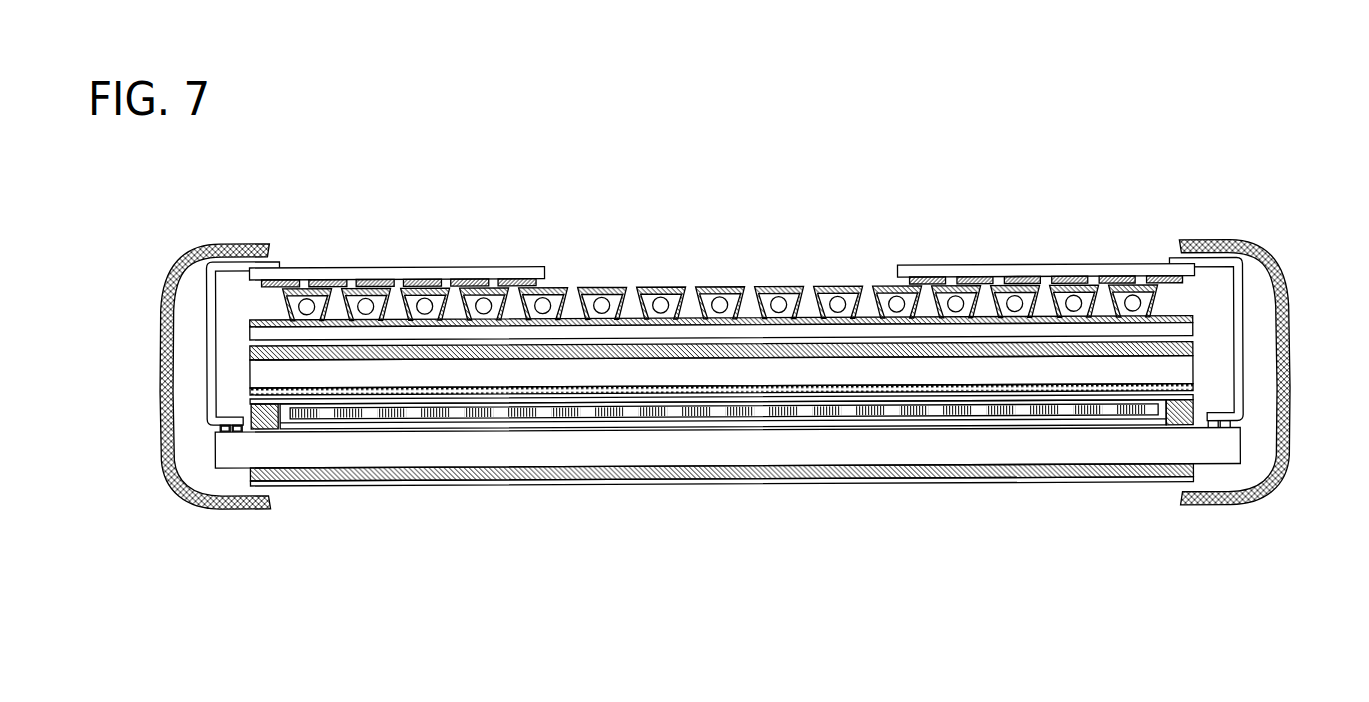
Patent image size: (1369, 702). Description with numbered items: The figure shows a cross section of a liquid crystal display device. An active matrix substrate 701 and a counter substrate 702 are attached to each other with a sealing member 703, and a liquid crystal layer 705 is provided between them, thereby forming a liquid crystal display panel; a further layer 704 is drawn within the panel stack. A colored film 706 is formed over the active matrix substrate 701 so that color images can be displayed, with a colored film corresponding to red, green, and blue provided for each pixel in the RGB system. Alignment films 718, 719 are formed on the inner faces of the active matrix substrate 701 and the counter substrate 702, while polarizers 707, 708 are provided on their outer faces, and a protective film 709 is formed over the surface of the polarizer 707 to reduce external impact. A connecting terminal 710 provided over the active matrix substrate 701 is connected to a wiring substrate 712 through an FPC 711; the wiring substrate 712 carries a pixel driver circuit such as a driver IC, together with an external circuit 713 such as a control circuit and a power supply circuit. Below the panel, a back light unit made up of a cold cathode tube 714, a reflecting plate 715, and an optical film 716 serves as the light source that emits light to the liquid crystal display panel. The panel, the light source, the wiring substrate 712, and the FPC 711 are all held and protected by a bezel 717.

The active matrix substrate 701 is at (452, 445).
The counter substrate 702 is at (538, 373).
The sealing member 703 is at (272, 432).
The optical sheet 704 is at (710, 400).
The liquid crystal layer 705 is at (937, 408).
The colored film 706 is at (653, 388).
The polarizer 707 is at (1043, 466).
The polarizer 708 is at (1092, 348).
The protective film 709 is at (880, 484).
The connecting terminal 710 is at (232, 427).
The FPC 711 is at (210, 376).
The wiring substrate 712 is at (392, 277).
The external circuit 713 is at (362, 278).
The cold cathode tube 714 is at (770, 295).
The reflecting plate 715 is at (728, 288).
The optical film 716 is at (582, 336).
The bezel 717 is at (212, 243).
The alignment film 718 is at (1152, 414).
The alignment film 719 is at (1090, 404).